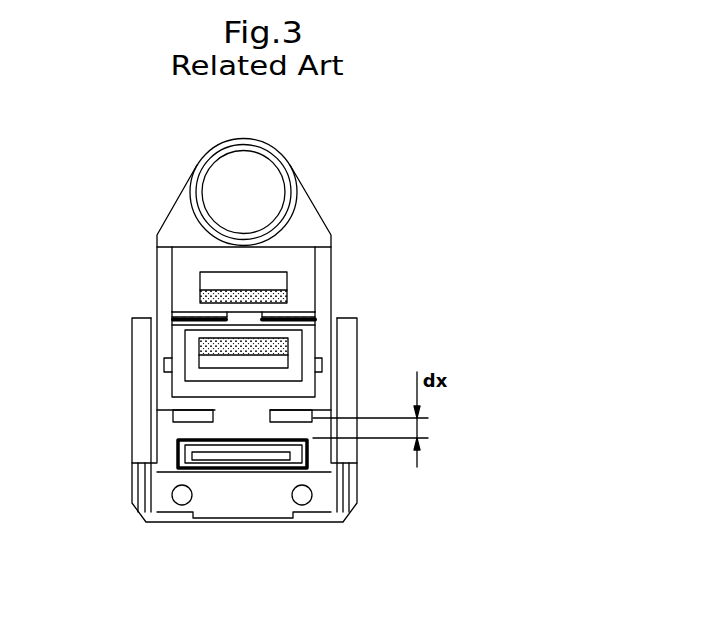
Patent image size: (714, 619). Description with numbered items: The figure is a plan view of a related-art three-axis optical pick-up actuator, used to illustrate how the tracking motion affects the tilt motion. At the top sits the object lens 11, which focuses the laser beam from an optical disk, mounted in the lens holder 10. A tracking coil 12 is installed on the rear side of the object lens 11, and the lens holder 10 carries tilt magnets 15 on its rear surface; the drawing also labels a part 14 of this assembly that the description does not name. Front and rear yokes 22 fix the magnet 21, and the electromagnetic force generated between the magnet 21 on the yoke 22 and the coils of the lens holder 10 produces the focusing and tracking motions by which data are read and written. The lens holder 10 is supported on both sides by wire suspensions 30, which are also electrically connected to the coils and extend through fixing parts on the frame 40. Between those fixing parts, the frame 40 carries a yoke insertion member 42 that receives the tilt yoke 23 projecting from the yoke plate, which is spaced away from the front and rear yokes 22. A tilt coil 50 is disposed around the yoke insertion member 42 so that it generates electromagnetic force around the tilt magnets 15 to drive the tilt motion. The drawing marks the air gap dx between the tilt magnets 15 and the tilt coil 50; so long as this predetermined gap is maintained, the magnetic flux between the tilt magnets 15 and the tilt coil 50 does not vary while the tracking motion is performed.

The lens holder 10 is at (312, 260).
The object lens 11 is at (222, 187).
The tracking coil 12 is at (184, 320).
The yoke 14 is at (180, 350).
The tilt magnets 15 is at (283, 415).
The magnet 21 is at (277, 347).
The front and rear yokes 22 is at (273, 363).
The tilt yoke 23 is at (233, 460).
The wire suspensions 30 is at (337, 452).
The frame 40 is at (318, 503).
The yoke insertion member 42 is at (177, 472).
The tilt coil 50 is at (178, 459).